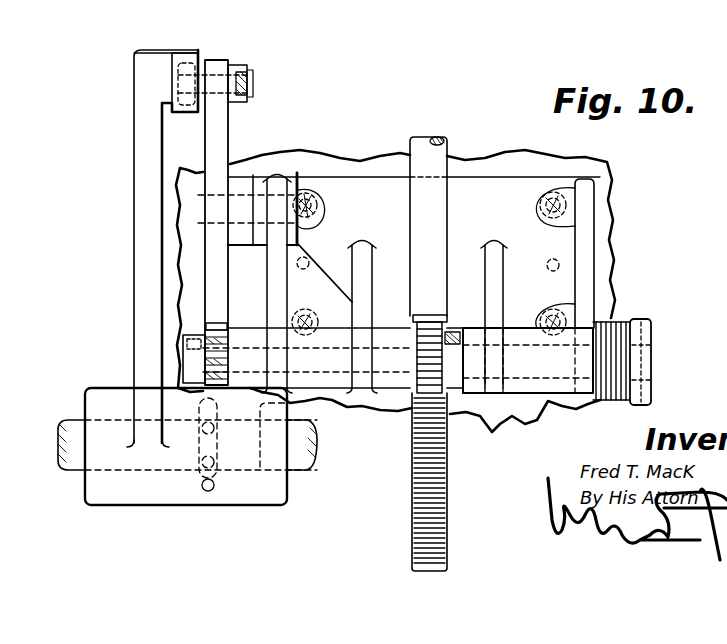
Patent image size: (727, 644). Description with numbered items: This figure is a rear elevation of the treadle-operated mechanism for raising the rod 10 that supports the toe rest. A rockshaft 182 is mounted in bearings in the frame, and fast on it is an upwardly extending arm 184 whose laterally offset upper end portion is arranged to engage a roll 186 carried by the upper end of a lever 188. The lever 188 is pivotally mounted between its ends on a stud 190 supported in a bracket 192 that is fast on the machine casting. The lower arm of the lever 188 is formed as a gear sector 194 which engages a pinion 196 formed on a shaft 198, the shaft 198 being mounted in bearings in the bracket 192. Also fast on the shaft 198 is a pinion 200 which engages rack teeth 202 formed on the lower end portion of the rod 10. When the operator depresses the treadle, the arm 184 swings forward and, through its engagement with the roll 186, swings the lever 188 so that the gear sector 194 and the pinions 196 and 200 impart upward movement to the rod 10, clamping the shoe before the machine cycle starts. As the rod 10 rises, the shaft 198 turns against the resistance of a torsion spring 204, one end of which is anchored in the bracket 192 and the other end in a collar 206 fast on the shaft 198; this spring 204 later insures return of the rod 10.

The rod 10 is at (443, 154).
The rockshaft 182 is at (297, 472).
The upwardly extending arm 184 is at (140, 152).
The roll 186 is at (186, 52).
The lever 188 is at (228, 131).
The stud 190 is at (240, 195).
The bracket 192 is at (357, 181).
The gear sector 194 is at (207, 308).
The pinion 196 is at (205, 357).
The shaft 198 is at (543, 378).
The pinion 200 is at (415, 384).
The rack teeth 202 is at (411, 519).
The torsion spring 204 is at (608, 333).
The collar 206 is at (651, 333).